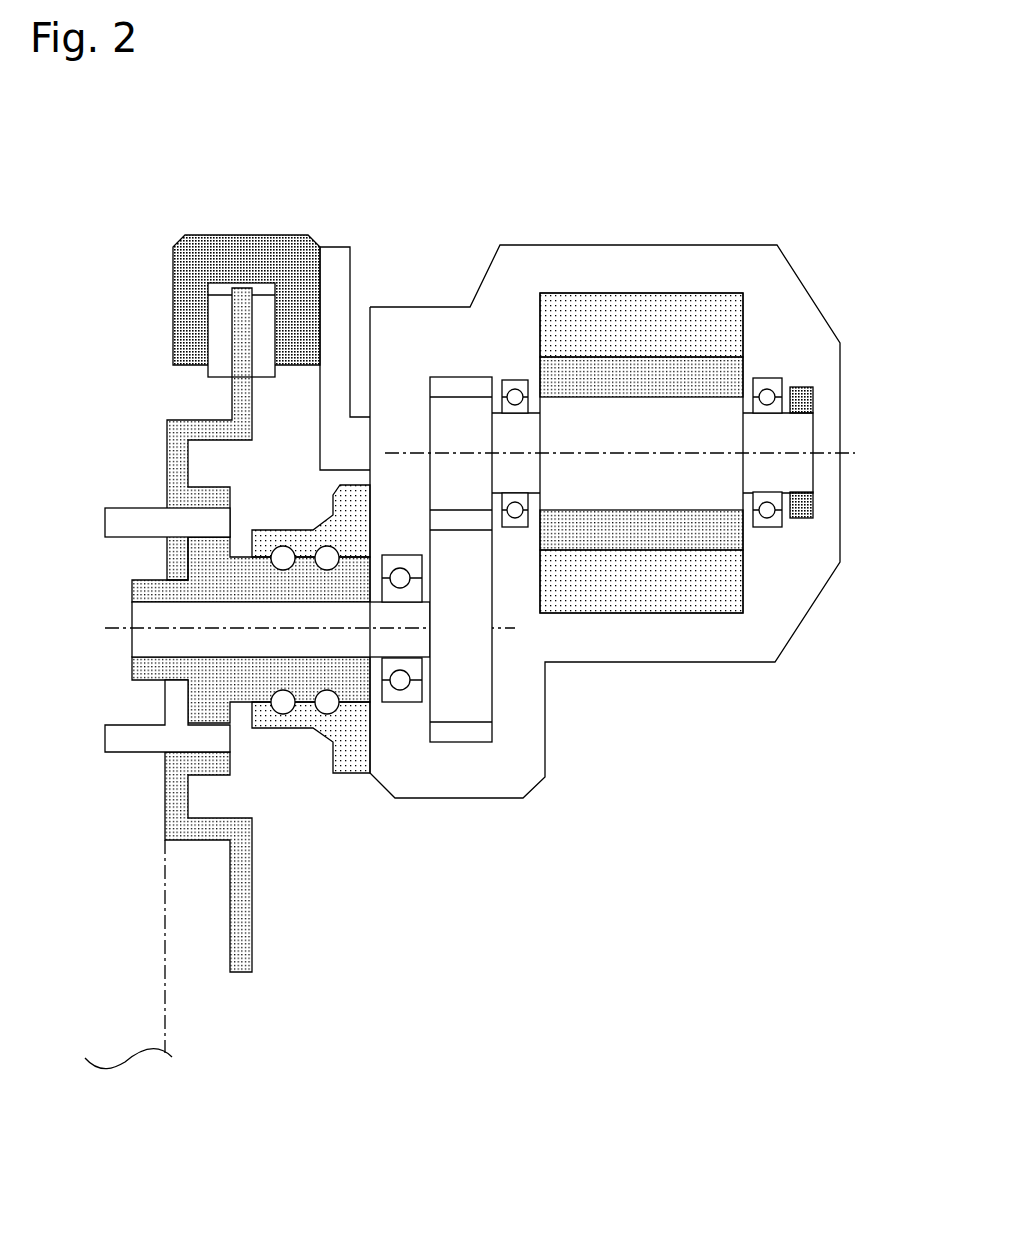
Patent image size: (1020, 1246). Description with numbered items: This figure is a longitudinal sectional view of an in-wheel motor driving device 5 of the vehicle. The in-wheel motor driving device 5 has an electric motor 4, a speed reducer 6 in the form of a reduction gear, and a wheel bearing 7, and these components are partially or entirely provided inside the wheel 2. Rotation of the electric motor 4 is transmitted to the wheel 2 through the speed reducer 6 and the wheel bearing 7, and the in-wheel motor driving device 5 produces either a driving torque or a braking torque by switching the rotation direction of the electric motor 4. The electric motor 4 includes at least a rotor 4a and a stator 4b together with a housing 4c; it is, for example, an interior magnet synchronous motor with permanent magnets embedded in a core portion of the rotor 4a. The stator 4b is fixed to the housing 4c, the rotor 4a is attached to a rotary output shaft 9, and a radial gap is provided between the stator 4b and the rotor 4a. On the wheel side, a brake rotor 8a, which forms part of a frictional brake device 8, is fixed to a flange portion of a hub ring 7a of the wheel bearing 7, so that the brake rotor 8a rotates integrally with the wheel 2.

The wheel 2 is at (147, 980).
The electric motor 4 is at (716, 539).
The rotor 4a is at (728, 377).
The stator 4b is at (686, 325).
The housing 4c is at (787, 590).
The in-wheel motor driving device 5 is at (584, 565).
The speed reducer 6 is at (470, 745).
The wheel bearing 7 is at (293, 730).
The hub ring 7a is at (153, 583).
The frictional brake device 8 is at (205, 232).
The brake rotor 8a is at (180, 445).
The rotary output shaft 9 is at (580, 413).